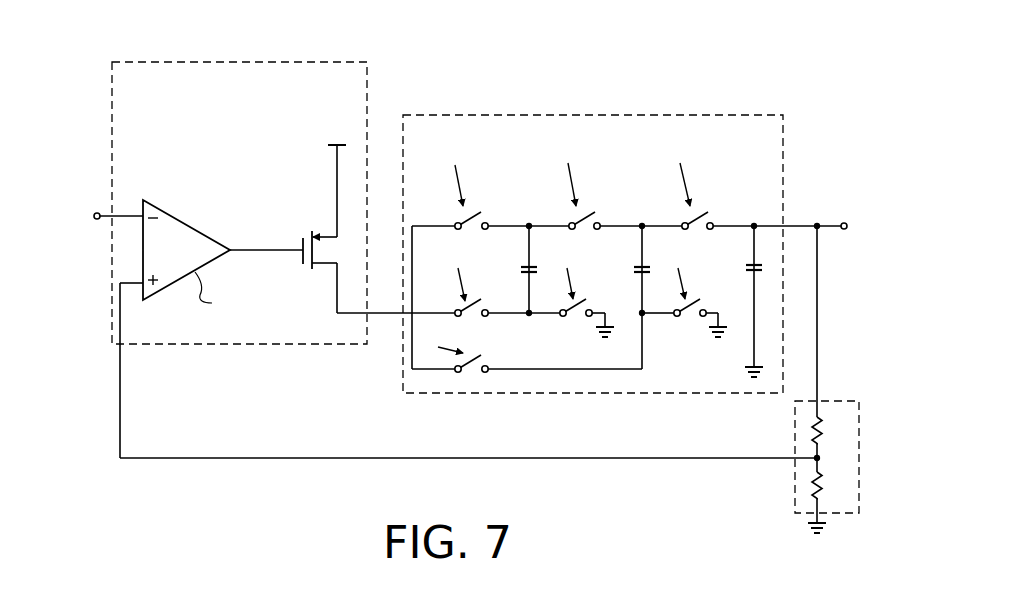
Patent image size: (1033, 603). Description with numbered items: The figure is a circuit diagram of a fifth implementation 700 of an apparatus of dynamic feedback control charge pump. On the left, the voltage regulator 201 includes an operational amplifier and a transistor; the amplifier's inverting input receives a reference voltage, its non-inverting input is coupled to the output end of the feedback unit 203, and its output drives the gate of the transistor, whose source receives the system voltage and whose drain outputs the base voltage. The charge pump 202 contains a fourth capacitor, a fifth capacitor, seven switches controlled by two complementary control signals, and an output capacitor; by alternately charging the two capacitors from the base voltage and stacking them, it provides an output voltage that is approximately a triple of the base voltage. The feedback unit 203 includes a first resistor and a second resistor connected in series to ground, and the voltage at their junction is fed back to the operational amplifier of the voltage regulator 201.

The voltage regulator 201 is at (182, 62).
The charge pump 202 is at (498, 114).
The feedback unit 203 is at (790, 481).
The fifth implementation of an apparatus of dynamic feedback control charge pump 700 is at (843, 597).